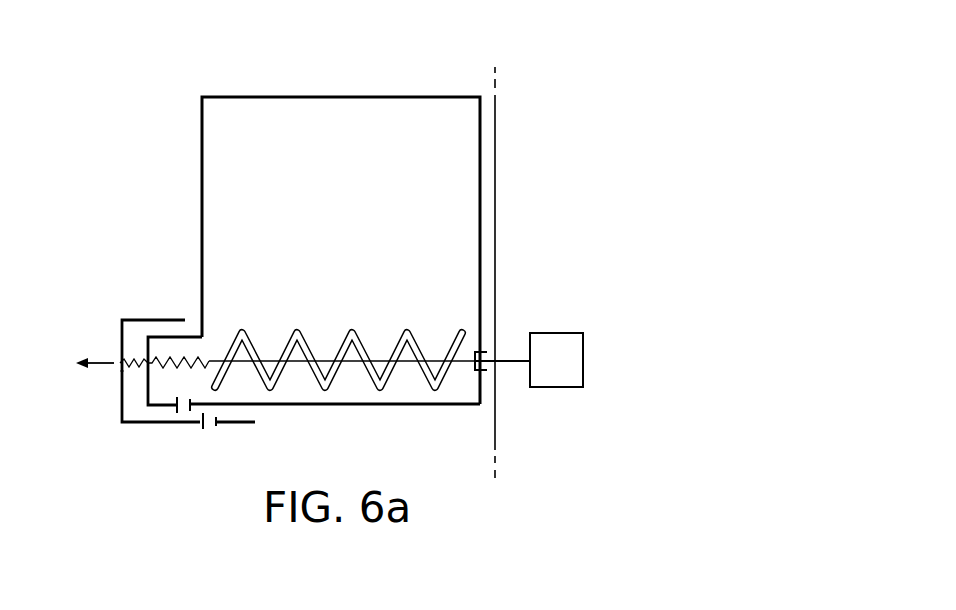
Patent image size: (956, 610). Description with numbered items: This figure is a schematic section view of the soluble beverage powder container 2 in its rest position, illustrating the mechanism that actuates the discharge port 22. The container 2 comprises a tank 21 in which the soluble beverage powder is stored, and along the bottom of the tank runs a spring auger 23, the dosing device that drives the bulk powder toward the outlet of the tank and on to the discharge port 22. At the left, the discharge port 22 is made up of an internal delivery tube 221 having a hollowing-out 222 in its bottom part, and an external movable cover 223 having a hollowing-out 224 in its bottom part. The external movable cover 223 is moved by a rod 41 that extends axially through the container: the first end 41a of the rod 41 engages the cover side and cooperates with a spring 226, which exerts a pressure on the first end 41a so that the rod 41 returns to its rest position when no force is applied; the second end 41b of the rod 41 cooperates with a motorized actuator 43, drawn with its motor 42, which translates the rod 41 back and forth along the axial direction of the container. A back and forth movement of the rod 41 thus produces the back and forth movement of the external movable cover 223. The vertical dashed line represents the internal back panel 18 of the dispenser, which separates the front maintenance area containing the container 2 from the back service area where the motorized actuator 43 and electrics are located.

The soluble beverage powder container 2 is at (328, 76).
The internal back panel 18 is at (497, 213).
The tank 21 is at (201, 173).
The discharge port 22 is at (142, 304).
The spring auger 23 is at (395, 376).
The rod 41 is at (331, 359).
The first end of the rod 41a is at (208, 359).
The second end of the rod 41b is at (474, 351).
The motor 42 is at (584, 362).
The motorized actuator 43 is at (512, 371).
The internal delivery tube 221 is at (147, 344).
The hollowing-out 222 is at (183, 410).
The external movable cover 223 is at (120, 415).
The hollowing-out 224 is at (211, 427).
The spring 226 is at (135, 368).